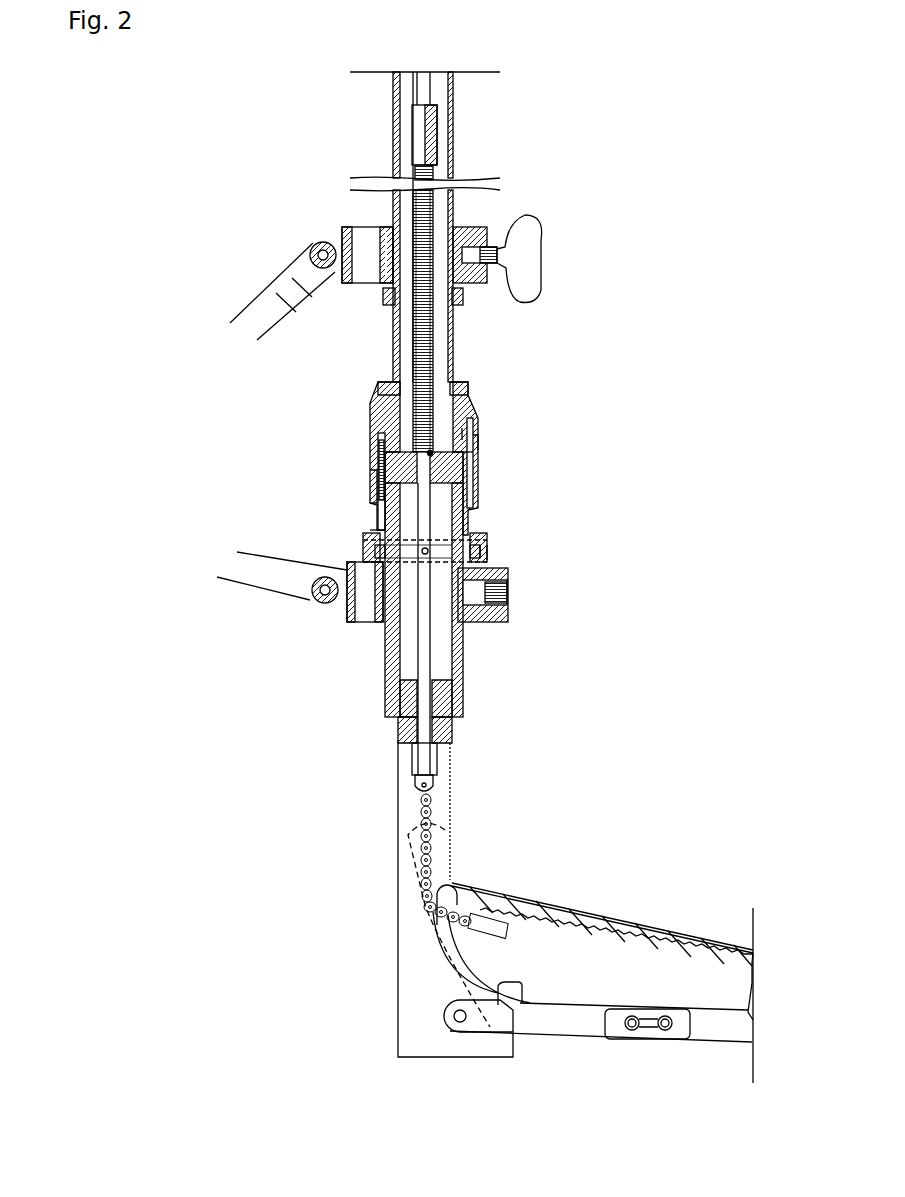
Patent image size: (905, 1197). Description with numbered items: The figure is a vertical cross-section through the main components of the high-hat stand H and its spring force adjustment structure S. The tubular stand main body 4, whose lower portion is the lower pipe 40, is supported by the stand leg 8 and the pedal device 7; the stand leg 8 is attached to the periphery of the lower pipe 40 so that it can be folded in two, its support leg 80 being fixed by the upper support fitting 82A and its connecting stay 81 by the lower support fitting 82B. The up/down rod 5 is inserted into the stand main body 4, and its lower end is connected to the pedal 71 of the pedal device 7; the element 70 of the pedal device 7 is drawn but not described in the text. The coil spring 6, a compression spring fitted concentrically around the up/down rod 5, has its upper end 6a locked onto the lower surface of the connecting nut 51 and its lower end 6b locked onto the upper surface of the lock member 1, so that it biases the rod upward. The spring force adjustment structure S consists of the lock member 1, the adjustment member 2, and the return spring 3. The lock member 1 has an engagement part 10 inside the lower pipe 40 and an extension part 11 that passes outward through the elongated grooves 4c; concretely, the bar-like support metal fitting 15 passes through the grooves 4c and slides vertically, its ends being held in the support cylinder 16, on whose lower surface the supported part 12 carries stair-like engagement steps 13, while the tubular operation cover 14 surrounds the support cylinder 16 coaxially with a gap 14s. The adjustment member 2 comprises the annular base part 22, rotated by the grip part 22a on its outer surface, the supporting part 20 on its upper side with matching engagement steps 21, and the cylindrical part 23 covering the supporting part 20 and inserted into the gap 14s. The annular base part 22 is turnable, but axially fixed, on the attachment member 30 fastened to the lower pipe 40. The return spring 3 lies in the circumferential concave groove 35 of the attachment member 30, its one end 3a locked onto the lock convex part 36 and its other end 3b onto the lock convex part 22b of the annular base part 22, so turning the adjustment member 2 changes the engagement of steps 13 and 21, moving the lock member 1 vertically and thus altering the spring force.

The lock member 1 is at (372, 408).
The adjustment member 2 is at (375, 522).
The return spring 3 is at (485, 563).
The one end side of return spring 3a is at (376, 560).
The other end side of return spring 3b is at (483, 548).
The stand main body 4 is at (395, 120).
The elongated grooves 4c is at (380, 392).
The up/down rod 5 is at (432, 92).
The coil spring 6 is at (433, 322).
The one end side of coil spring 6a is at (433, 166).
The other end side of coil spring 6b is at (431, 452).
The pedal device 7 is at (665, 940).
The stand leg 8 is at (252, 300).
The engagement part 10 is at (480, 480).
The extension part 11 is at (380, 440).
The supported part 12 is at (375, 490).
The engagement steps 13 is at (326, 486).
The operation cover 14 is at (470, 470).
The gap 14s is at (462, 432).
The support metal fitting 15 is at (545, 463).
The support cylinder 16 is at (478, 442).
The supporting part 20 is at (375, 455).
The engagement steps 21 is at (322, 468).
The annular base part 22 is at (365, 548).
The grip part 22a is at (350, 565).
The lock convex part 22b is at (488, 553).
The cylindrical part 23 is at (470, 456).
The attachment member 30 is at (385, 565).
The concave groove 35 is at (485, 540).
The lock convex part 36 is at (373, 542).
The lower pipe 40 is at (395, 160).
The connecting nut 51 is at (433, 135).
The stand 70 is at (397, 968).
The pedal 71 is at (572, 912).
The support leg 80 is at (312, 282).
The connecting stay 81 is at (240, 552).
The upper support fitting 82A is at (480, 232).
The lower support fitting 82B is at (508, 615).
The spring force adjustment structure S is at (560, 432).
The high-hat stand H is at (653, 172).